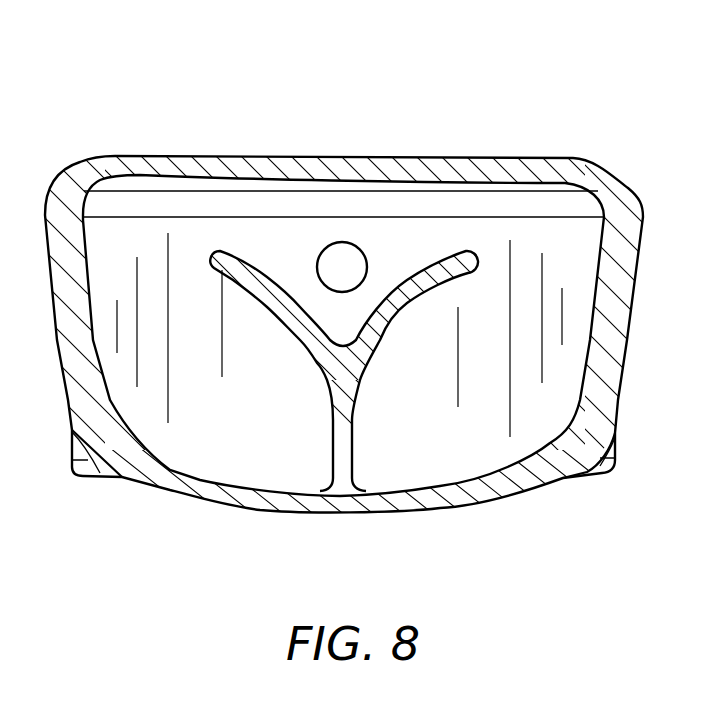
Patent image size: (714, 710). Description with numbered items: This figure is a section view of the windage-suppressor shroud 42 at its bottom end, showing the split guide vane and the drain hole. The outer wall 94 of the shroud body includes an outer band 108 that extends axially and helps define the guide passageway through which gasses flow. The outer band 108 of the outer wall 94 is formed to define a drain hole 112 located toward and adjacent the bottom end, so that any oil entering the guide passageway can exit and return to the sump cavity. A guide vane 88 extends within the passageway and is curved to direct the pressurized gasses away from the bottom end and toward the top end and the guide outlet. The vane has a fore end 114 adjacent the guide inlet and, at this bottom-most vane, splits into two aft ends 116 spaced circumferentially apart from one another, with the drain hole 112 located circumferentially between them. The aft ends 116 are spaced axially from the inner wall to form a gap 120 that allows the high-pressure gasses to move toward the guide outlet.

The windage-suppressor shroud 42 is at (535, 85).
The guide vane 88 is at (363, 380).
The outer wall 94 is at (486, 464).
The outer band 108 is at (205, 448).
The drain hole 112 is at (368, 265).
The fore end 114 is at (334, 460).
The aft end 116 is at (215, 273).
The gap 120 is at (176, 233).